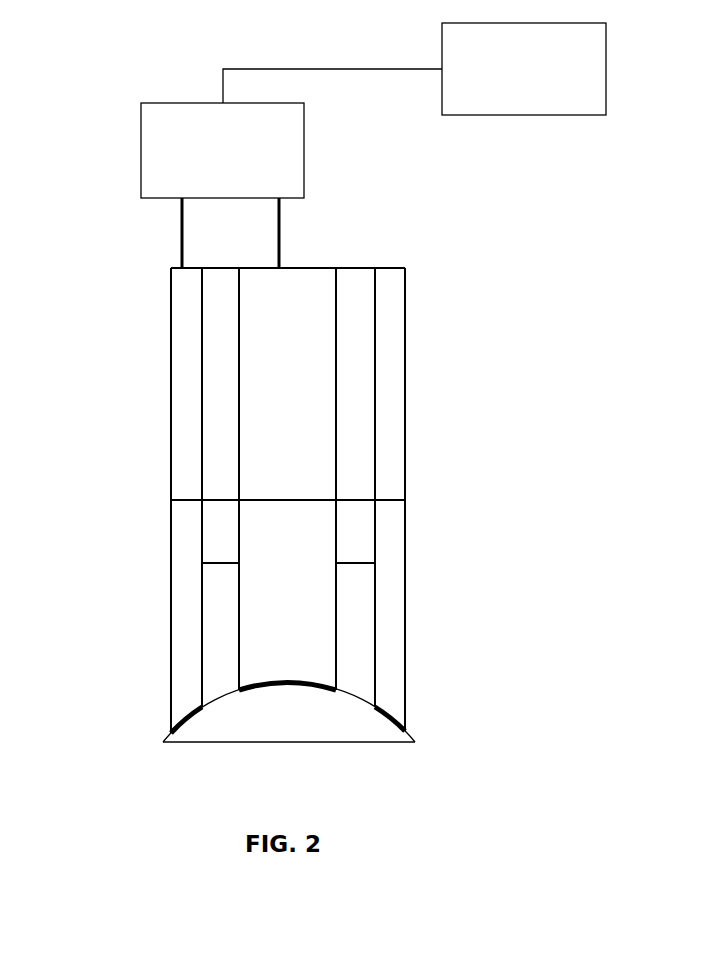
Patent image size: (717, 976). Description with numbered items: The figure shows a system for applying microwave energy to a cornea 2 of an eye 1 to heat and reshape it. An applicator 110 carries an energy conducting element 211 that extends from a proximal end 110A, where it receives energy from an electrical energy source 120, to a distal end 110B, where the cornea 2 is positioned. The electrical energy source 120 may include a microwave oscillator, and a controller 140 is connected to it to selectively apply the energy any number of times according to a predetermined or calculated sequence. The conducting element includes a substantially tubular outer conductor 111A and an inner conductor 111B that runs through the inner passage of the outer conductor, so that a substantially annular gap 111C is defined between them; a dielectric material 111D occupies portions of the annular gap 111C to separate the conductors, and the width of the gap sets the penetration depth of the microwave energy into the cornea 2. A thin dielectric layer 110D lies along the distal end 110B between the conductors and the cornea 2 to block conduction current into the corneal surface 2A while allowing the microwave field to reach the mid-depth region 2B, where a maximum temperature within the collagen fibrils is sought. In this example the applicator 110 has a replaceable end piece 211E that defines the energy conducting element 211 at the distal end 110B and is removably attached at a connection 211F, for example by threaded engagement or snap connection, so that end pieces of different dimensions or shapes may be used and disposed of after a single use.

The controller 140 is at (597, 77).
The electrical energy source 120 is at (151, 147).
The proximal end 110A is at (155, 225).
The applicator 110 is at (274, 504).
The distal end 110B is at (148, 725).
The dielectric layer 110D is at (182, 723).
The outer conductor 111A is at (183, 331).
The inner conductor 111B is at (292, 328).
The annular gap 111C is at (217, 627).
The dielectric material 111D is at (220, 407).
The energy conducting element 211 is at (383, 372).
The connection 211F is at (393, 499).
The replaceable end piece 211E is at (390, 577).
The eye 1 is at (252, 728).
The cornea 2 is at (248, 702).
The corneal surface 2A is at (288, 685).
The mid-depth region 2B is at (283, 703).